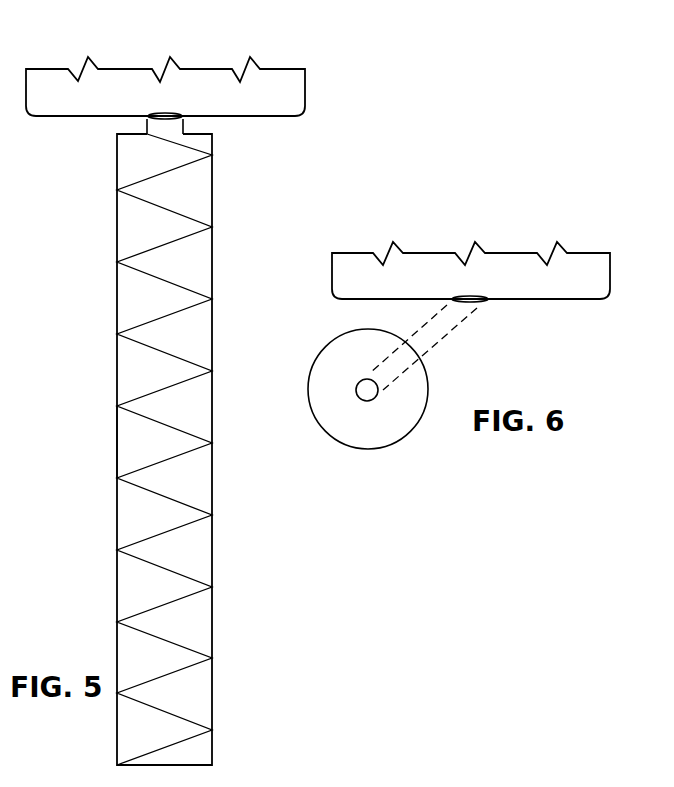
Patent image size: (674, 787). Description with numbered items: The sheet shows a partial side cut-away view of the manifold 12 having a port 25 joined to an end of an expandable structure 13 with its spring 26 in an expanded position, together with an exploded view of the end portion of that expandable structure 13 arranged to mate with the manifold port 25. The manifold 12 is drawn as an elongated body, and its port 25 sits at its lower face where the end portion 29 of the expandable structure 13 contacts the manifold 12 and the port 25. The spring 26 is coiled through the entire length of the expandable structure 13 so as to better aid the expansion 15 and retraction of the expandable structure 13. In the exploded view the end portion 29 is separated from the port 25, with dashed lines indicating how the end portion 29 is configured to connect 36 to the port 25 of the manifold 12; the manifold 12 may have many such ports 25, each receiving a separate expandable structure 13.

In FIG. 5, the manifold 12 is at (290, 96).
In FIG. 6, the manifold 12 is at (592, 284).
In FIG. 5, the expandable structure 13 is at (118, 383).
In FIG. 6, the expandable structure 13 is at (395, 446).
In FIG. 5, the expansion 15 is at (120, 430).
In FIG. 5, the port 25 is at (164, 113).
In FIG. 6, the port 25 is at (467, 296).
In FIG. 5, the spring 26 is at (147, 203).
In FIG. 5, the end portion 29 is at (147, 122).
In FIG. 6, the end portion 29 is at (368, 402).
In FIG. 6, the connect 36 is at (437, 315).